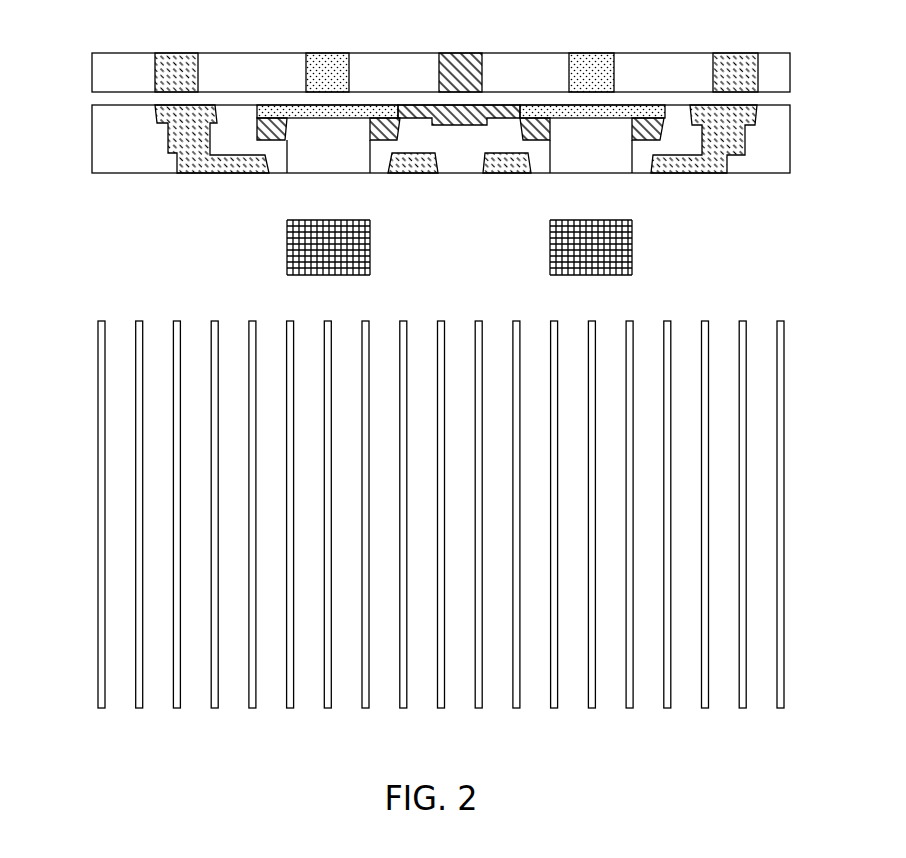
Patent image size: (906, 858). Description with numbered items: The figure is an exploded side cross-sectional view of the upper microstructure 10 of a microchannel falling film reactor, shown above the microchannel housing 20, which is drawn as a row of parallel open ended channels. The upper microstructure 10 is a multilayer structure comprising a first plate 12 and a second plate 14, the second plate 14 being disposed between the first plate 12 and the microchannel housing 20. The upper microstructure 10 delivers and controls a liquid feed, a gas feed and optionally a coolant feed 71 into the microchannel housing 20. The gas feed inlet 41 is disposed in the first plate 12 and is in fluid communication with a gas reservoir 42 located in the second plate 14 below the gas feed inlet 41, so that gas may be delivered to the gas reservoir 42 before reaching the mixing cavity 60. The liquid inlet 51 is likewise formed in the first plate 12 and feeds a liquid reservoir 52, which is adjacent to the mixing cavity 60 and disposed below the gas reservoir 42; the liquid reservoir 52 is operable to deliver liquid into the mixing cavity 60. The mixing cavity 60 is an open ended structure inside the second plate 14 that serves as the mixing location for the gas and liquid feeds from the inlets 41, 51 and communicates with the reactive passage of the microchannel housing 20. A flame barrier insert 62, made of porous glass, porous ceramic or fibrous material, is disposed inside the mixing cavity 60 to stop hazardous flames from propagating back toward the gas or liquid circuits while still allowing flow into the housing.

The upper microstructure 10 is at (90, 53).
The first plate 12 is at (796, 72).
The second plate 14 is at (796, 137).
The microchannel housing 20 is at (95, 708).
The gas feed inlet 41 is at (327, 53).
The gas reservoir 42 is at (378, 107).
The liquid inlet 51 is at (459, 53).
The liquid reservoir 52 is at (274, 118).
The mixing cavity 60 is at (352, 160).
The flame barrier insert 62 is at (294, 256).
The coolant feed 71 is at (175, 53).